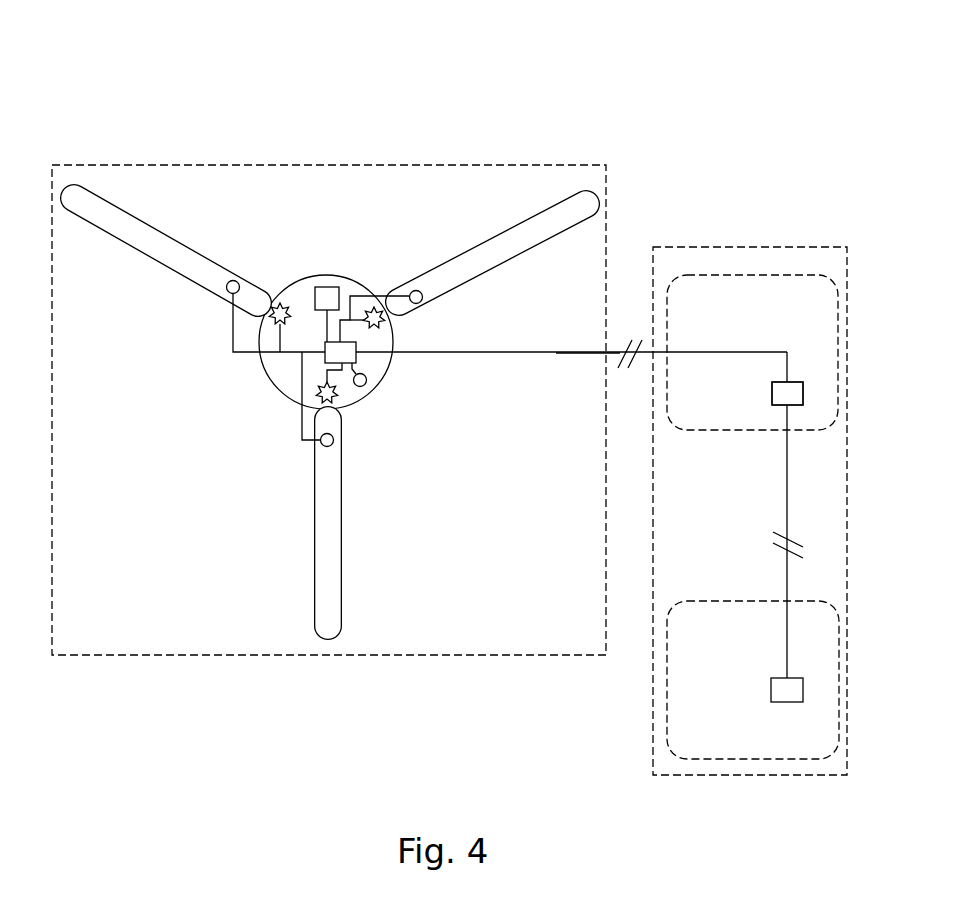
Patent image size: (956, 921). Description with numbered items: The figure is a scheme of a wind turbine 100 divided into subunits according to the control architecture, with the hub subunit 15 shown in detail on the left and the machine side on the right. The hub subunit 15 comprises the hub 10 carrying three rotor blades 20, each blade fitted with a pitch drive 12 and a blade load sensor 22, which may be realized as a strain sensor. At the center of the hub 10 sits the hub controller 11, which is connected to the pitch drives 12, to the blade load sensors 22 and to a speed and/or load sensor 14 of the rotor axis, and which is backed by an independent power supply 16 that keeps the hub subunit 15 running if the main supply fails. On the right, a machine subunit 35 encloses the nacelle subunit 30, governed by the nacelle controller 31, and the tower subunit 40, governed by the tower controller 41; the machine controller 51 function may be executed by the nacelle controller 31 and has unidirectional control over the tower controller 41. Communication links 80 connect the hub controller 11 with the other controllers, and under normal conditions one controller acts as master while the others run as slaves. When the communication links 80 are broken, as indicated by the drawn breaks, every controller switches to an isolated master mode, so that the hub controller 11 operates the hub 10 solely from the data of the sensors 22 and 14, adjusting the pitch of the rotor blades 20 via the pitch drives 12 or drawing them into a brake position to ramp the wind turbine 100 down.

The wind turbine 100 is at (480, 16).
The hub subunit 15 is at (218, 165).
The hub 10 is at (305, 275).
The rotor blades 20 is at (315, 548).
The blade load sensors 22 is at (331, 447).
The backup power supply 16 is at (332, 287).
The pitch drives 12 is at (378, 308).
The hub controller 11 is at (325, 363).
The speed and/or load sensor 14 is at (365, 386).
The communication links 80 is at (556, 353).
The machine subunit 35 is at (767, 246).
The nacelle subunit 30 is at (703, 272).
The nacelle controller 31 is at (775, 405).
The machine controller 51 is at (787, 393).
The tower subunit 40 is at (782, 762).
The tower controller 41 is at (771, 702).